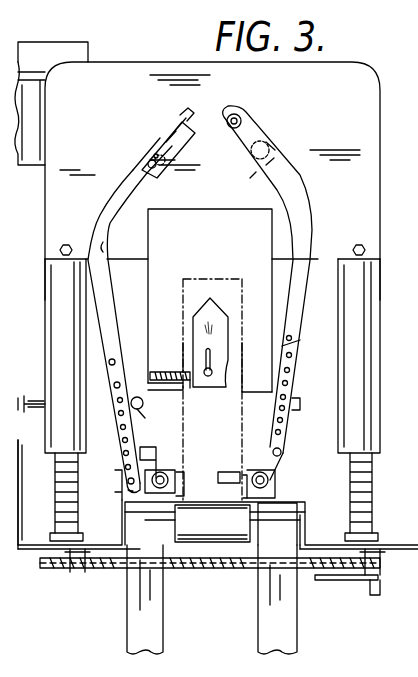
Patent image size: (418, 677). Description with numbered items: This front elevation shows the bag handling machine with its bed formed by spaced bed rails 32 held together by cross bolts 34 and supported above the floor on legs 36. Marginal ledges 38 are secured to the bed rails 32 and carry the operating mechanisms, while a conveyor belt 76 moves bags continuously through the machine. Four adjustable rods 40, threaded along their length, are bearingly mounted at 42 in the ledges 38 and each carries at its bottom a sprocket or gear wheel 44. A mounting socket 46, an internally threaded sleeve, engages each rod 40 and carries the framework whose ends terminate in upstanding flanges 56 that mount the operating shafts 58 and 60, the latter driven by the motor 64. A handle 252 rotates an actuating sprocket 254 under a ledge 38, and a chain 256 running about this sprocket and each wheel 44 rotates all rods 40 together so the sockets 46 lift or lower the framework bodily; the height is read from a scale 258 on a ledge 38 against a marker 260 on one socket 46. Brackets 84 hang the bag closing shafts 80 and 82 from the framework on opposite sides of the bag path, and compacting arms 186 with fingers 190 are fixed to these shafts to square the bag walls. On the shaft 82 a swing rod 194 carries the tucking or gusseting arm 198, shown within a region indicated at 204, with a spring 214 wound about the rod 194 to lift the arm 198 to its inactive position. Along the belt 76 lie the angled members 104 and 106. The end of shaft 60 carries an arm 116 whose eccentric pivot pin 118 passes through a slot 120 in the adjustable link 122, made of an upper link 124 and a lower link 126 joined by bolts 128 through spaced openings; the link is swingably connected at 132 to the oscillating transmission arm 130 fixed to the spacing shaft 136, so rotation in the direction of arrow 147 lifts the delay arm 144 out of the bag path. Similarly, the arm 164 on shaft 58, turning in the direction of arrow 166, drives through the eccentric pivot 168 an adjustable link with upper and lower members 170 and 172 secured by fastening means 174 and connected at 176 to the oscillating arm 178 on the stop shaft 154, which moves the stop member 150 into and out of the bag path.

The bed rails 32 is at (316, 496).
The cross bolts 34 is at (283, 531).
The legs 36 is at (162, 617).
The marginal ledges 38 is at (34, 550).
The adjustable rods 40 is at (62, 503).
The bearing mountings 42 is at (56, 532).
The sprocket or gear wheel 44 is at (76, 571).
The mounting socket 46 is at (45, 300).
The upstanding flanges 56 is at (380, 100).
The operating shaft 58 is at (272, 160).
The operating shaft 60 is at (186, 120).
The driving motor 64 is at (69, 48).
The conveyor belt 76 is at (204, 535).
The bag closing shaft 80 is at (298, 406).
The bag closing shaft 82 is at (145, 418).
The brackets 84 is at (147, 274).
The angled member 104 is at (244, 494).
The angled member 106 is at (179, 478).
The arm 116 is at (144, 152).
The pivot pin 118 is at (158, 158).
The slot 120 is at (172, 146).
The adjustable link 122 is at (96, 221).
The upper link 124 is at (103, 252).
The lower link 126 is at (110, 421).
The bolts 128 is at (115, 385).
The oscillating transmission arm 130 is at (100, 496).
The swingable connection 132 is at (100, 477).
The delaying or spacing shaft 136 is at (170, 474).
The delay or spacing arm 144 is at (161, 447).
The arrow 147 is at (146, 121).
The stop member 150 is at (226, 470).
The stop shaft 154 is at (290, 475).
The arm 164 is at (253, 170).
The arrow 166 is at (266, 107).
The eccentric pivot 168 is at (232, 114).
The upper link member 170 is at (311, 203).
The lower link member 172 is at (291, 420).
The fastening means 174 is at (296, 341).
The swingable connection 176 is at (287, 450).
The oscillating arm 178 is at (289, 465).
The compacting arms 186 is at (162, 390).
The fingers 190 is at (180, 344).
The swing rod 194 is at (190, 388).
The tucking or gusseting arm 198 is at (219, 315).
The slot 204 is at (214, 275).
The spring 214 is at (166, 370).
The handle 252 is at (376, 595).
The actuating sprocket 254 is at (326, 580).
The chain 256 is at (118, 570).
The scale 258 is at (20, 464).
The marker 260 is at (32, 394).